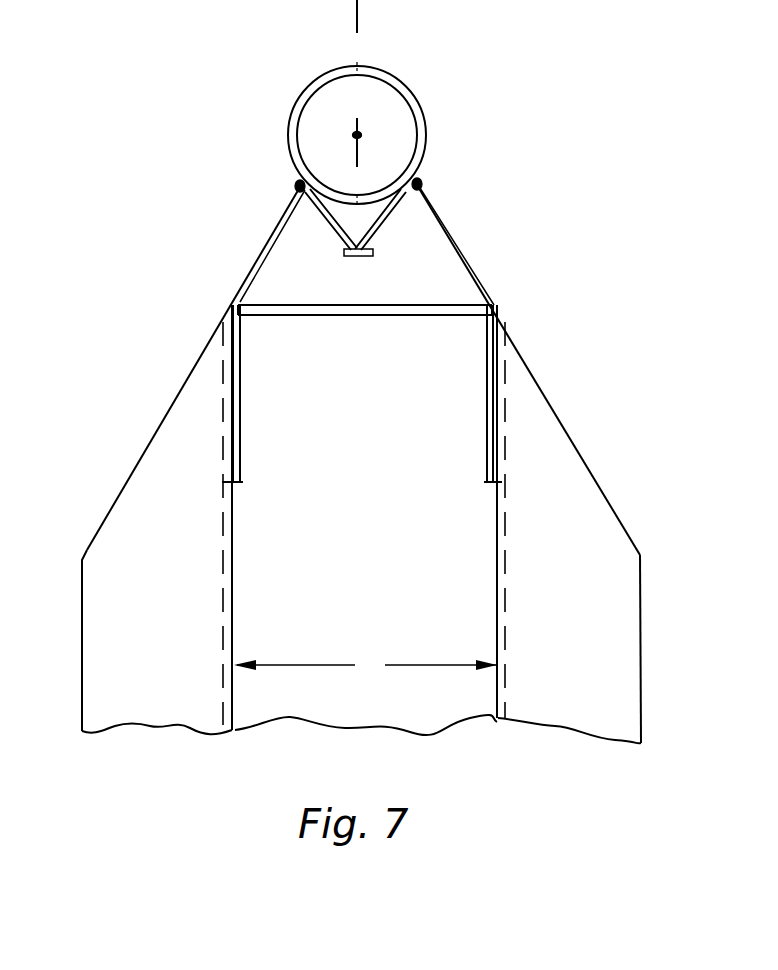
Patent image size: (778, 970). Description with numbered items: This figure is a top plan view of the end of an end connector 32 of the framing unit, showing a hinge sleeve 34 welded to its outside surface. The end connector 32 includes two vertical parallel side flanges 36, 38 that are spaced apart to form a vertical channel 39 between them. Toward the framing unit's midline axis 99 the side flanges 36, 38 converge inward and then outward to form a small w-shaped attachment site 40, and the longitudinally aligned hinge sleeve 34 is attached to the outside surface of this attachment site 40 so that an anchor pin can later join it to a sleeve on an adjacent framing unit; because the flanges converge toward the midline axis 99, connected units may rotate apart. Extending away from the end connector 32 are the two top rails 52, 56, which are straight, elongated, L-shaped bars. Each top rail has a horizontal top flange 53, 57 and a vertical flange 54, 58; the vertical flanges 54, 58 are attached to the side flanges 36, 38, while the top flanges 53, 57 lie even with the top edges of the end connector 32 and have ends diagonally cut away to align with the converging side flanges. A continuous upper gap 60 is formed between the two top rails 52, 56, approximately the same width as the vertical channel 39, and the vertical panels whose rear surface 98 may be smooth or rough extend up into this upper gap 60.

The end connector 32 is at (195, 141).
The midline axis 99 is at (362, 14).
The hinge sleeve 34 is at (432, 97).
The rear surface 98 is at (362, 137).
The attachment site 40 is at (324, 245).
The top rail 52 is at (140, 425).
The top rail 56 is at (583, 430).
The top flange 53 is at (158, 556).
The top flange 57 is at (591, 557).
The side flange 38 is at (240, 398).
The side flange 36 is at (487, 402).
The vertical channel 39 is at (382, 450).
The vertical flange 54 is at (232, 598).
The vertical flange 58 is at (498, 592).
The upper gap 60 is at (370, 663).